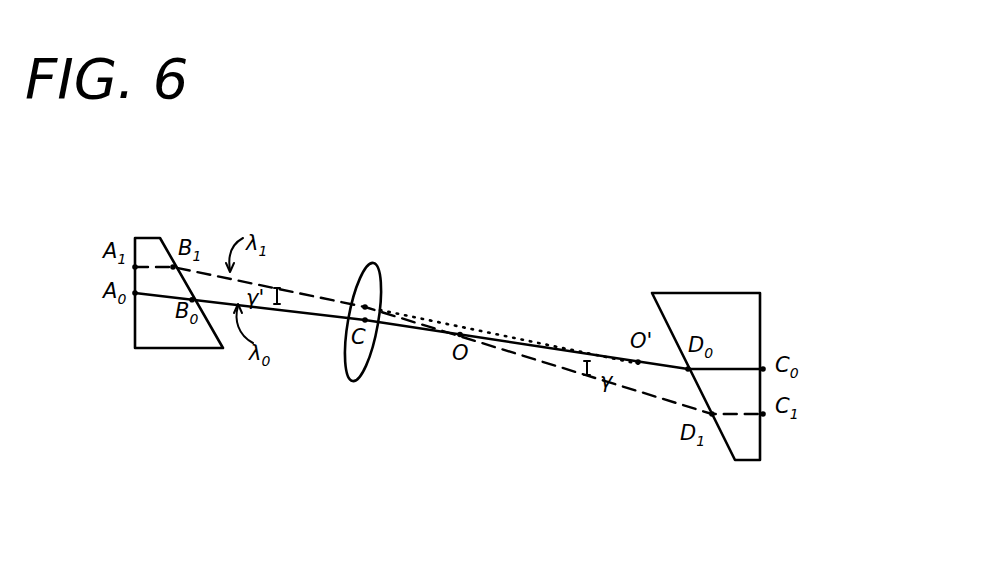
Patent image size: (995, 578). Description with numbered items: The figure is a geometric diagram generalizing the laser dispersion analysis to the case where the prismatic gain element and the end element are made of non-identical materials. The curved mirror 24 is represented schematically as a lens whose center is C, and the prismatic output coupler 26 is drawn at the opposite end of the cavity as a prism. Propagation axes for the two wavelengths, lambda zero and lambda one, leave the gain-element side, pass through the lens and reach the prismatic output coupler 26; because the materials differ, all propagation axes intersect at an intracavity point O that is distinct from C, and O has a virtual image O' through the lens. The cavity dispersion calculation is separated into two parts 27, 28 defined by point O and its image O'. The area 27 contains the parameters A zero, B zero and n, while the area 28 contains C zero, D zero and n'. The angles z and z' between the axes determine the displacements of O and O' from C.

The curved mirror 24 is at (370, 287).
The prismatic output coupler 26 is at (740, 302).
The first part of the cavity dispersion calculation 27 is at (117, 188).
The second part of the cavity dispersion calculation 28 is at (767, 480).